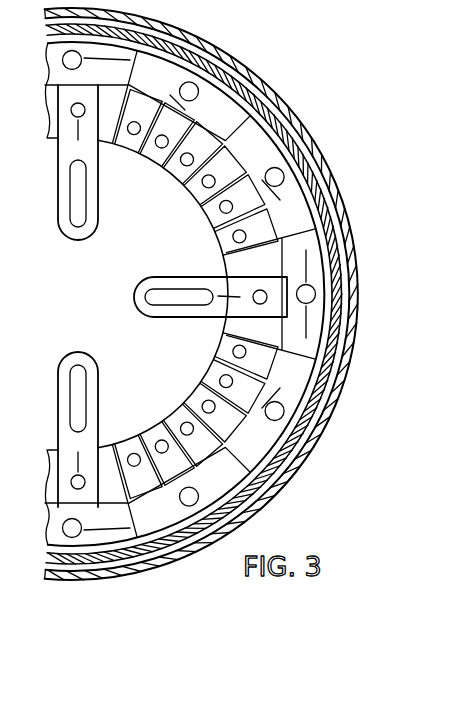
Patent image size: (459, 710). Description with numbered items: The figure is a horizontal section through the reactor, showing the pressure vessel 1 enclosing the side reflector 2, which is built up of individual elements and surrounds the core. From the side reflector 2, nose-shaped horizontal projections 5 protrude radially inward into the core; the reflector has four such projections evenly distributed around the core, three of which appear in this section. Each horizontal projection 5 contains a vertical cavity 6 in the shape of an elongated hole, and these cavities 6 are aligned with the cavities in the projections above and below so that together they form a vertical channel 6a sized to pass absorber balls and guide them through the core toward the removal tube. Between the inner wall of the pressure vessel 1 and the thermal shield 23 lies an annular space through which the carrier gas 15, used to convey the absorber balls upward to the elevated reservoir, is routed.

The pressure vessel 1 is at (244, 66).
The carrier gas 15 is at (301, 132).
The thermal shield 23 is at (288, 472).
The side reflector 2 is at (200, 230).
The horizontal projection 5 is at (172, 296).
The vertical cavity 6 is at (141, 296).
The vertical channel 6a is at (176, 293).